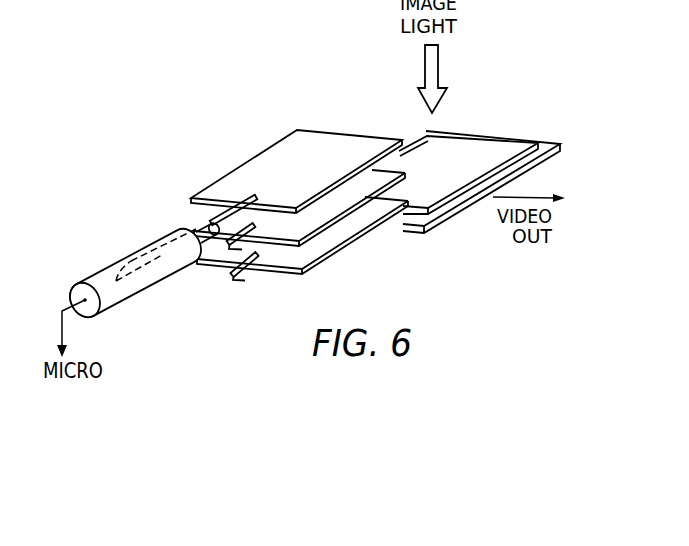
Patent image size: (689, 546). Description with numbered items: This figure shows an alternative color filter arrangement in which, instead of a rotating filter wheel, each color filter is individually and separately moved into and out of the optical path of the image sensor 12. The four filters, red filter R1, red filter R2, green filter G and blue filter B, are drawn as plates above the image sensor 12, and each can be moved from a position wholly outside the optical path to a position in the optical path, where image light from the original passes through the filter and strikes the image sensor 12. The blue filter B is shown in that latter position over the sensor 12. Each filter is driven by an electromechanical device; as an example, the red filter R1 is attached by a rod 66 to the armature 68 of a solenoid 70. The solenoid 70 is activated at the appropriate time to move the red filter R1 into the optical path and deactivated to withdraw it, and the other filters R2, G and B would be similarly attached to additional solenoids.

The red filter R1 is at (298, 148).
The red filter R2 is at (370, 177).
The green filter G is at (340, 234).
The blue filter B is at (482, 147).
The image sensor 12 is at (558, 151).
The rod 66 is at (208, 213).
The armature 68 is at (147, 244).
The solenoid 70 is at (92, 275).